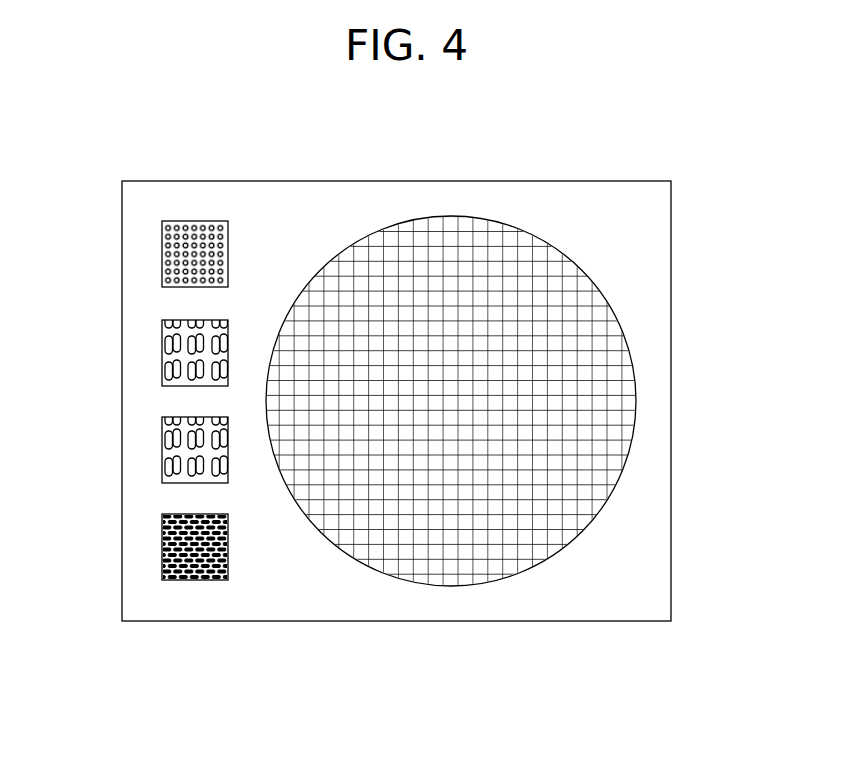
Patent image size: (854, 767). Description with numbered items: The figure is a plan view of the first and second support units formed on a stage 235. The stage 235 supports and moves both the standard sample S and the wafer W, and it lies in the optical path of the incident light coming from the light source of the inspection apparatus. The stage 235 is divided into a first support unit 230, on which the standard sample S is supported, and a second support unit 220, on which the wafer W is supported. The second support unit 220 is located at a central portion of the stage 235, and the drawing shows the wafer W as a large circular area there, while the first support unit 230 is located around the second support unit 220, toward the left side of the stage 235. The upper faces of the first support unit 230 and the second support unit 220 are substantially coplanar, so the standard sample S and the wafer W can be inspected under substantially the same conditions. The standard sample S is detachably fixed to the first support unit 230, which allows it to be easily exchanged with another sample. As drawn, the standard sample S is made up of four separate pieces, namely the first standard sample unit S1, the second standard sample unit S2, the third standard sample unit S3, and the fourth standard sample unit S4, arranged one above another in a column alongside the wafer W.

The second support unit 220 is at (507, 353).
The first support unit 230 is at (184, 350).
The stage 235 is at (672, 553).
The wafer W is at (637, 383).
The standard sample S is at (164, 350).
The first standard sample unit S1 is at (162, 254).
The second standard sample unit S2 is at (162, 353).
The third standard sample unit S3 is at (162, 449).
The fourth standard sample unit S4 is at (150, 547).